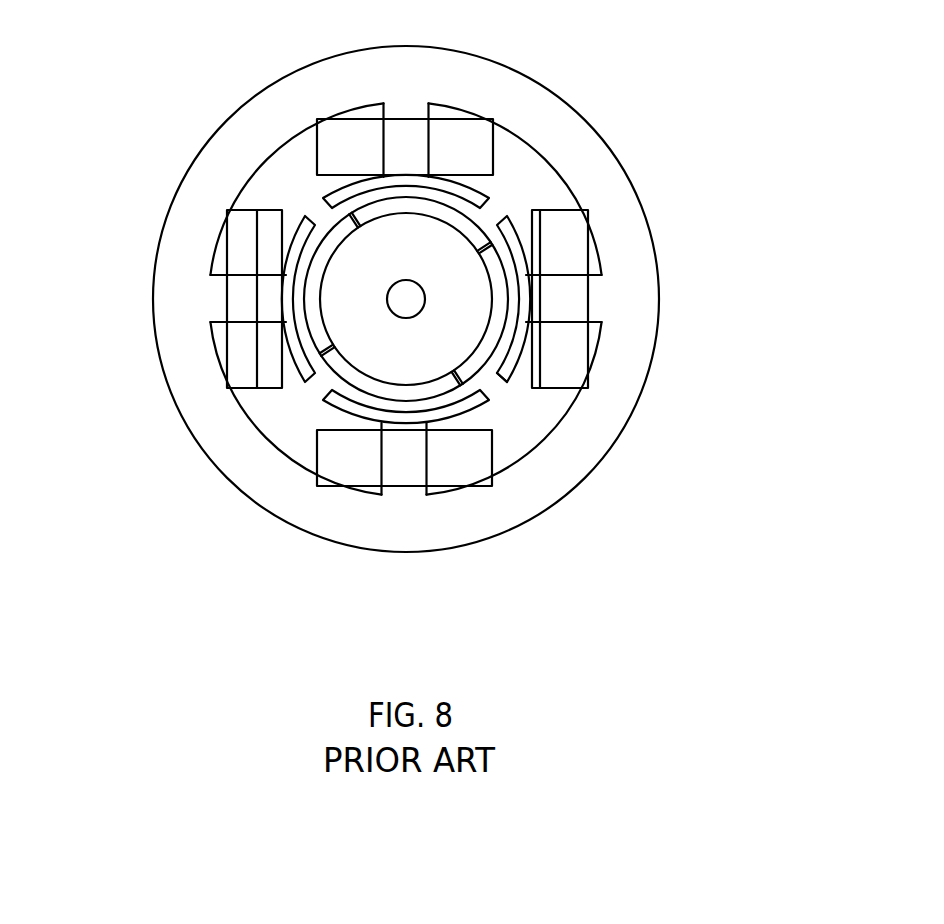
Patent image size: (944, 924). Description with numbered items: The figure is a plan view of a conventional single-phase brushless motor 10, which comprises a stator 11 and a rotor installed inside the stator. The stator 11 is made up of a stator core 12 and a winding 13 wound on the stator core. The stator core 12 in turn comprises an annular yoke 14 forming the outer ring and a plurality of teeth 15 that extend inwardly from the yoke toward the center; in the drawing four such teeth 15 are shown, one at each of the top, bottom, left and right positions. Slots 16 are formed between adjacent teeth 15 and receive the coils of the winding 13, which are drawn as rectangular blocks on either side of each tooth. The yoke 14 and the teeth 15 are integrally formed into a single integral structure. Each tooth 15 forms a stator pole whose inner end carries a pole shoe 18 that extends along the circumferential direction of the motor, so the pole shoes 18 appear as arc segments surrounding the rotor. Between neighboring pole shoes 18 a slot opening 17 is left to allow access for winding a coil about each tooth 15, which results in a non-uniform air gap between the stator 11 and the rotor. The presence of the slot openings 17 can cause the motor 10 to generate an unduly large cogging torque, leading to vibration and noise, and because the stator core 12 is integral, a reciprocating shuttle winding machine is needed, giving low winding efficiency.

The single-phase brushless motor 10 is at (150, 125).
The stator 11 is at (757, 152).
The stator core 12 is at (702, 130).
The winding 13 is at (557, 356).
The annular yoke 14 is at (603, 200).
The teeth 15 is at (597, 300).
The slots 16 is at (505, 445).
The slot opening 17 is at (492, 385).
The pole shoe 18 is at (503, 368).